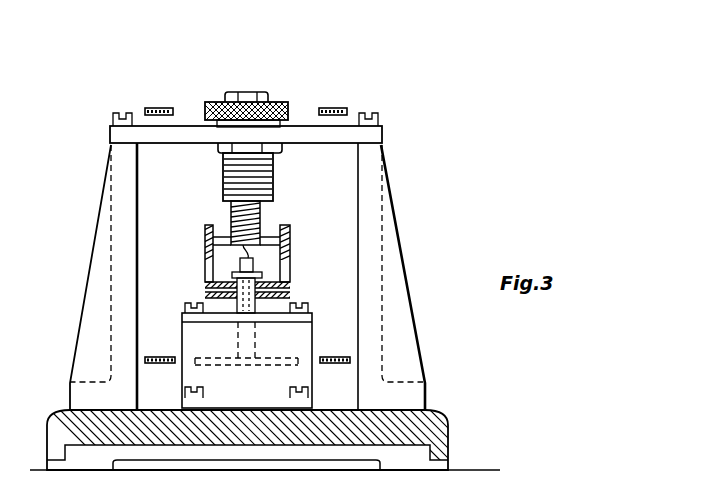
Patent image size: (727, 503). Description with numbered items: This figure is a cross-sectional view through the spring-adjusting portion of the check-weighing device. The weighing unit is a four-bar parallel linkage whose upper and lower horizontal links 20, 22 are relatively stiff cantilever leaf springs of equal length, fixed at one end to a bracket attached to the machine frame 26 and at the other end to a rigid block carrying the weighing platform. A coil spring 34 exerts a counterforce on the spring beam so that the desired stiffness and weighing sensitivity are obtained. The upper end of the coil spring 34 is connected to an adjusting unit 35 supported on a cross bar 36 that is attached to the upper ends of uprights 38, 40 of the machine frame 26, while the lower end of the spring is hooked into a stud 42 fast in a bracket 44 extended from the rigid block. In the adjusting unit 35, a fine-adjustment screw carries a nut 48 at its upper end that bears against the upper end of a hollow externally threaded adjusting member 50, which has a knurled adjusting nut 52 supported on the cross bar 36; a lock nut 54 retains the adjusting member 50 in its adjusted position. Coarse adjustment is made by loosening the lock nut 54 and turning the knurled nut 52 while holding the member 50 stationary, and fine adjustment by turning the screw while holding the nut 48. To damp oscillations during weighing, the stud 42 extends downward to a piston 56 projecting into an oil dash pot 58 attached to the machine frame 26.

The upper horizontal links 20 is at (153, 107).
The lower horizontal links 22 is at (162, 355).
The machine frame 26 is at (447, 425).
The coil spring 34 is at (261, 217).
The adjusting unit 35 is at (273, 82).
The cross bar 36 is at (118, 135).
The upright 38 is at (93, 275).
The upright 40 is at (403, 288).
The stud 42 is at (253, 267).
The bracket 44 is at (205, 296).
The nut 48 is at (268, 95).
The hollow externally threaded adjusting member 50 is at (274, 173).
The knurled adjusting nut 52 is at (212, 107).
The lock nut 54 is at (216, 147).
The piston 56 is at (272, 362).
The oil dash pot 58 is at (205, 377).